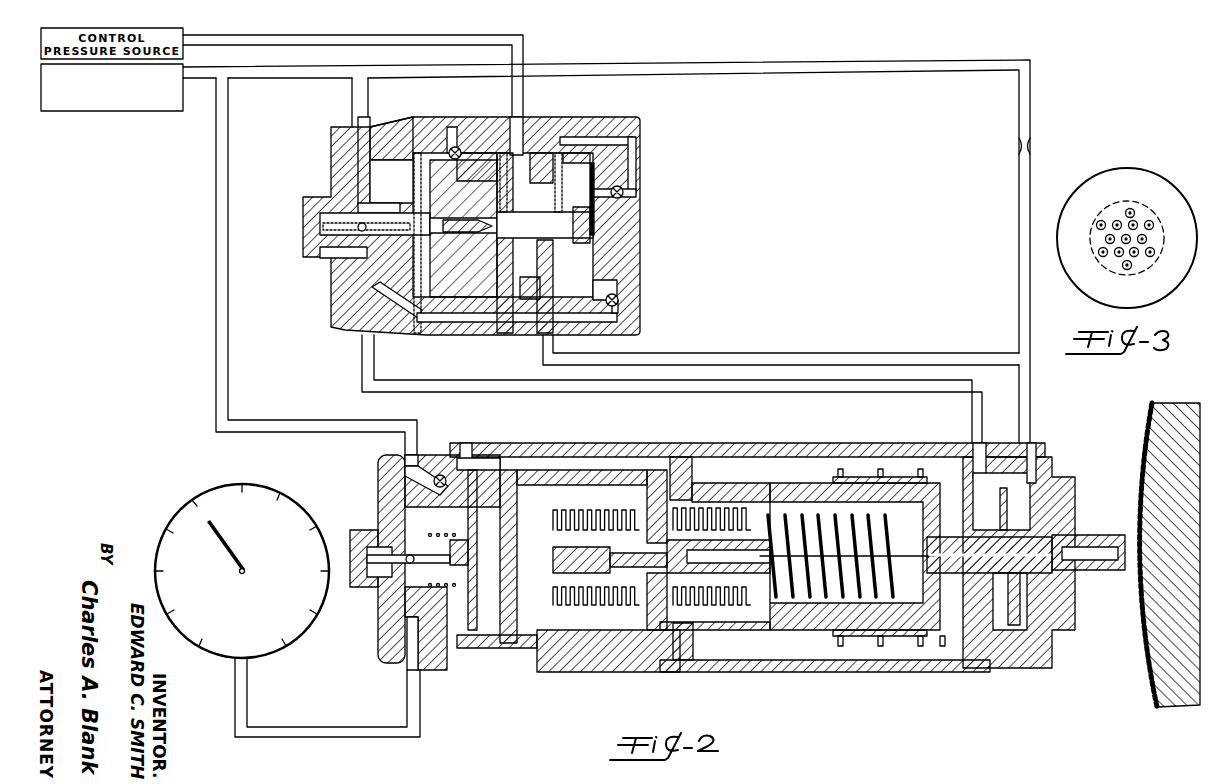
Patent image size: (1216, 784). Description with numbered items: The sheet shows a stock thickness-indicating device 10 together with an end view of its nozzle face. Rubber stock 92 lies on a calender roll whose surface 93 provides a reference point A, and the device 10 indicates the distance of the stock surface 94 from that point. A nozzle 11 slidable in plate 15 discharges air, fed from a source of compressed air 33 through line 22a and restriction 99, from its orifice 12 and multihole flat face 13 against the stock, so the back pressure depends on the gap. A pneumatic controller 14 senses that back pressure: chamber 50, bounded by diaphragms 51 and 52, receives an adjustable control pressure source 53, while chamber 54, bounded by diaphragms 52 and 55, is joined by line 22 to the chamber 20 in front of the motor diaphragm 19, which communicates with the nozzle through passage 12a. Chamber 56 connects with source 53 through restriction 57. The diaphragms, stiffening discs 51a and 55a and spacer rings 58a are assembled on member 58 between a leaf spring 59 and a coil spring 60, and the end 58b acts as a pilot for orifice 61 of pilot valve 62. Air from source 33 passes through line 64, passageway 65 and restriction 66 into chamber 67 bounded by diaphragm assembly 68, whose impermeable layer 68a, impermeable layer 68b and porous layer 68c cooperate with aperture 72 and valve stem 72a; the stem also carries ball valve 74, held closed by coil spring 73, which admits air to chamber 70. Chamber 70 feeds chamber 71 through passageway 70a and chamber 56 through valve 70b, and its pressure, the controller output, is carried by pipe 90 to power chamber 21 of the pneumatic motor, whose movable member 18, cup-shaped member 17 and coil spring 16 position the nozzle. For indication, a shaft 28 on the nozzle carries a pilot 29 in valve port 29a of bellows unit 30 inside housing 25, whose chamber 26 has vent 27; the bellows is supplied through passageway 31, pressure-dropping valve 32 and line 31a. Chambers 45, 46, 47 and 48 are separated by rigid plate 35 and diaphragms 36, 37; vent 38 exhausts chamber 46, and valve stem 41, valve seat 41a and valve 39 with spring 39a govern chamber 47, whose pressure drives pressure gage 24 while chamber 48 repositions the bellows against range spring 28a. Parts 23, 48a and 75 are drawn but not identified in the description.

In FIG. 2, the thickness-indicating device 10 is at (830, 675).
In FIG. 2, the nozzle 11 is at (1082, 534).
In FIG. 2, the orifice 12 is at (1122, 534).
In FIG. 2, the passage 12a is at (1022, 530).
In FIG. 3, the multihole flat face 13 is at (1100, 270).
In FIG. 2, the pneumatic controller 14 is at (641, 272).
In FIG. 2, the plate 15 is at (1046, 670).
In FIG. 2, the coil spring 16 is at (925, 476).
In FIG. 2, the cup-shaped member 17 is at (845, 474).
In FIG. 2, the movable member 18 is at (1018, 668).
In FIG. 2, the flexible diaphragm 19 is at (982, 443).
In FIG. 2, the chamber 20 is at (1030, 618).
In FIG. 2, the power chamber 21 is at (979, 635).
In FIG. 2, the air line 22 is at (953, 357).
In FIG. 2, the line 22a is at (758, 63).
In FIG. 2, the housing 23 is at (614, 674).
In FIG. 2, the pressure gage 24 is at (297, 645).
In FIG. 2, the housing 25 is at (691, 452).
In FIG. 2, the chamber 26 is at (812, 505).
In FIG. 2, the vent 27 is at (678, 674).
In FIG. 2, the shaft 28 is at (826, 620).
In FIG. 2, the range spring 28a is at (795, 620).
In FIG. 2, the pilot 29 is at (720, 600).
In FIG. 2, the valve port 29a is at (762, 578).
In FIG. 2, the bellows unit 30 is at (556, 564).
In FIG. 2, the passageway 31 is at (596, 448).
In FIG. 2, the line 31a is at (272, 424).
In FIG. 2, the pressure-dropping valve 32 is at (439, 475).
In FIG. 2, the source of compressed air 33 is at (162, 112).
In FIG. 2, the rigid plate 35 is at (517, 512).
In FIG. 2, the flexible diaphragm 36 is at (512, 530).
In FIG. 2, the flexible diaphragm 37 is at (478, 532).
In FIG. 2, the exhaust vent 38 is at (466, 458).
In FIG. 2, the valve 39 is at (392, 548).
In FIG. 2, the spring 39a is at (378, 585).
In FIG. 2, the valve stem 41 is at (420, 570).
In FIG. 2, the valve seat 41a is at (444, 542).
In FIG. 2, the chamber 45 is at (494, 672).
In FIG. 2, the chamber 46 is at (468, 672).
In FIG. 2, the chamber 47 is at (430, 672).
In FIG. 2, the chamber 48 is at (560, 672).
In FIG. 2, the block 48a is at (534, 672).
In FIG. 2, the chamber 50 is at (525, 318).
In FIG. 2, the diaphragm 51 is at (463, 234).
In FIG. 2, the diaphragm stiffening disc 51a is at (477, 167).
In FIG. 2, the diaphragm 52 is at (545, 286).
In FIG. 2, the source of control pressure 53 is at (185, 47).
In FIG. 2, the chamber 54 is at (538, 160).
In FIG. 2, the diaphragm 55 is at (572, 160).
In FIG. 2, the diaphragm stiffening disc 55a is at (578, 169).
In FIG. 2, the chamber 56 is at (592, 258).
In FIG. 2, the restriction 57 is at (624, 194).
In FIG. 2, the member 58 is at (545, 243).
In FIG. 2, the spacer rings 58a is at (544, 182).
In FIG. 2, the end of member 58b is at (483, 266).
In FIG. 2, the leaf spring 59 is at (597, 222).
In FIG. 2, the coil spring 60 is at (460, 187).
In FIG. 2, the orifice 61 is at (462, 252).
In FIG. 2, the pilot valve 62 is at (465, 217).
In FIG. 2, the line 64 is at (352, 108).
In FIG. 2, the passageway 65 is at (396, 126).
In FIG. 2, the restriction 66 is at (452, 127).
In FIG. 2, the chamber 67 is at (433, 252).
In FIG. 2, the diaphragm assembly 68 is at (356, 330).
In FIG. 2, the impermeable layer 68a is at (445, 342).
In FIG. 2, the impermeable layer 68b is at (400, 330).
In FIG. 2, the porous inner layer 68c is at (450, 300).
In FIG. 2, the chamber 70 is at (385, 186).
In FIG. 2, the passageway 70a is at (484, 333).
In FIG. 2, the valve 70b is at (618, 302).
In FIG. 2, the chamber 71 is at (468, 287).
In FIG. 2, the aperture 72 is at (399, 246).
In FIG. 2, the valve stem 72a is at (340, 280).
In FIG. 2, the coil spring 73 is at (303, 228).
In FIG. 2, the ball valve 74 is at (342, 186).
In FIG. 2, the passage 75 is at (336, 258).
In FIG. 2, the pipe 90 is at (486, 392).
In FIG. 2, the rubber stock 92 is at (1145, 480).
In FIG. 2, the surface of calender roll 93 is at (1150, 433).
In FIG. 2, the surface of stock 94 is at (1152, 690).
In FIG. 2, the restriction 99 is at (1035, 146).
In FIG. 2, the reference point A is at (1138, 548).